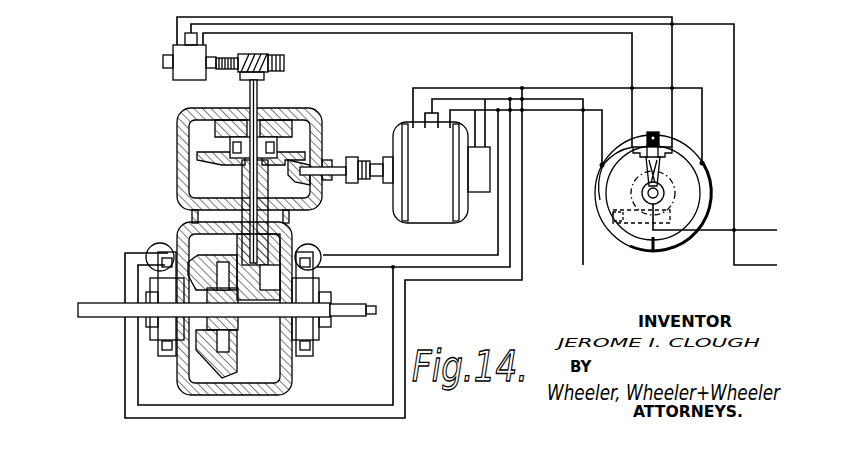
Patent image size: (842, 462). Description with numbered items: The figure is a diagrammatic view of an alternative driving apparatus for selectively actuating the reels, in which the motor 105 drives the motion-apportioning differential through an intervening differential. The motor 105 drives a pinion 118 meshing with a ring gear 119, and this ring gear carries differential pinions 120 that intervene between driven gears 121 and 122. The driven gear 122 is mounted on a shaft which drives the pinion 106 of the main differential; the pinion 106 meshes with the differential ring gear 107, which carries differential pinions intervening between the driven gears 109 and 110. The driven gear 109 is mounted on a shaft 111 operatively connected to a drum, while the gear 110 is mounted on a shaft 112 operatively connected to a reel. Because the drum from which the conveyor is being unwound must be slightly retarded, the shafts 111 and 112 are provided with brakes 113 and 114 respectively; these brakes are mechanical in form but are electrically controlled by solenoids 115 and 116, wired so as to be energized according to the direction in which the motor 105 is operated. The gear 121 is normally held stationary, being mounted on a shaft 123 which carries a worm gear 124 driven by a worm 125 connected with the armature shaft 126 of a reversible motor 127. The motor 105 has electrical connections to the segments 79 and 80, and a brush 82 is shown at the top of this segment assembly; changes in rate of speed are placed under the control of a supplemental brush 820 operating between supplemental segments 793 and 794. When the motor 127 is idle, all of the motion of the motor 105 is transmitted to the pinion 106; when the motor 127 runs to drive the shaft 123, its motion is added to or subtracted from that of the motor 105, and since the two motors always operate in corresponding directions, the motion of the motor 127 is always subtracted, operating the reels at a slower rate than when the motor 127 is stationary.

The segment 79 is at (601, 201).
The segment 80 is at (708, 198).
The brush 82 is at (651, 132).
The motor 105 is at (441, 172).
The pinion 106 is at (273, 249).
The differential ring gear 107 is at (232, 368).
The driven gear 109 is at (203, 346).
The driven gear 110 is at (225, 325).
The shaft 111 is at (88, 320).
The shaft 112 is at (334, 318).
The brake 113 is at (172, 326).
The brake 114 is at (313, 333).
The solenoid 115 is at (154, 250).
The solenoid 116 is at (318, 253).
The pinion 118 is at (312, 160).
The ring gear 119 is at (303, 143).
The differential pinions 120 is at (298, 128).
The gear 121 is at (268, 124).
The driven gear 122 is at (233, 168).
The shaft 123 is at (250, 92).
The worm gear 124 is at (284, 63).
The worm 125 is at (245, 60).
The armature shaft 126 is at (220, 64).
The reversible motor 127 is at (186, 66).
The supplemental segment 793 is at (628, 160).
The supplemental segment 794 is at (672, 160).
The supplemental brush 820 is at (662, 180).